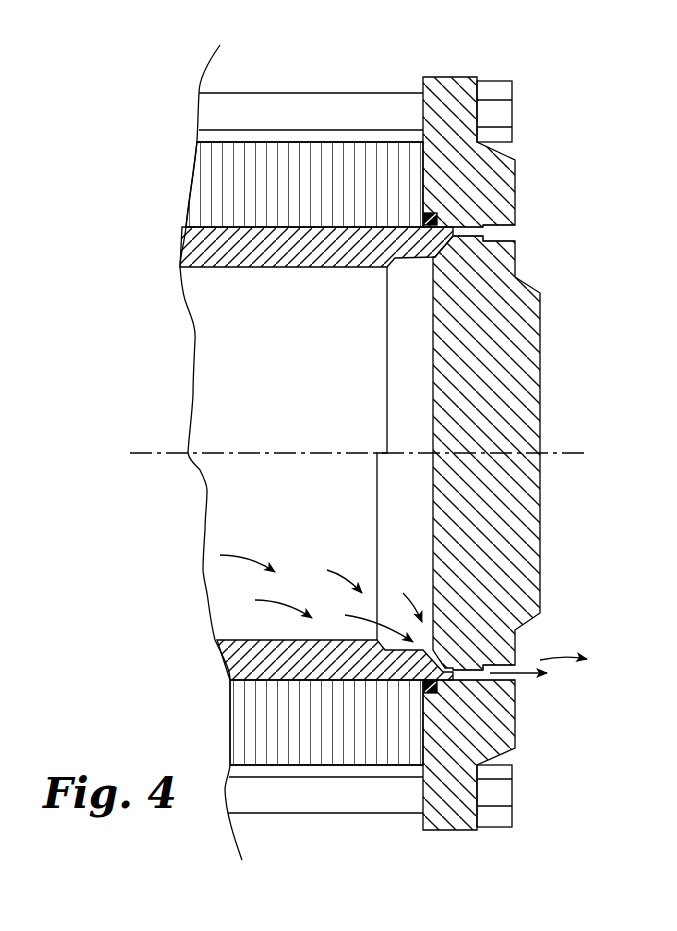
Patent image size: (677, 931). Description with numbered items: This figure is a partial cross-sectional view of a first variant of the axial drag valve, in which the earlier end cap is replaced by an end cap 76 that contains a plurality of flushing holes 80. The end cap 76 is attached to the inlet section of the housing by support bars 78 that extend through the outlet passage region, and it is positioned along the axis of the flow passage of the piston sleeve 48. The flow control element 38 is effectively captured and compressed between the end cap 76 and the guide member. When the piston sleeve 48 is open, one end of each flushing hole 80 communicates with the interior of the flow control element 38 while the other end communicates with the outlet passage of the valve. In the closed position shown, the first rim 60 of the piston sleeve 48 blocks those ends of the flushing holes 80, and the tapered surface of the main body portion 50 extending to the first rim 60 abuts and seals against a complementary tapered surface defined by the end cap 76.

The flow control element 38 is at (357, 771).
The piston sleeve 48 is at (212, 270).
The main body portion 50 is at (297, 252).
The first rim 60 is at (453, 227).
The end cap 76 is at (554, 386).
The support bars 78 is at (312, 110).
The flushing holes 80 is at (505, 233).